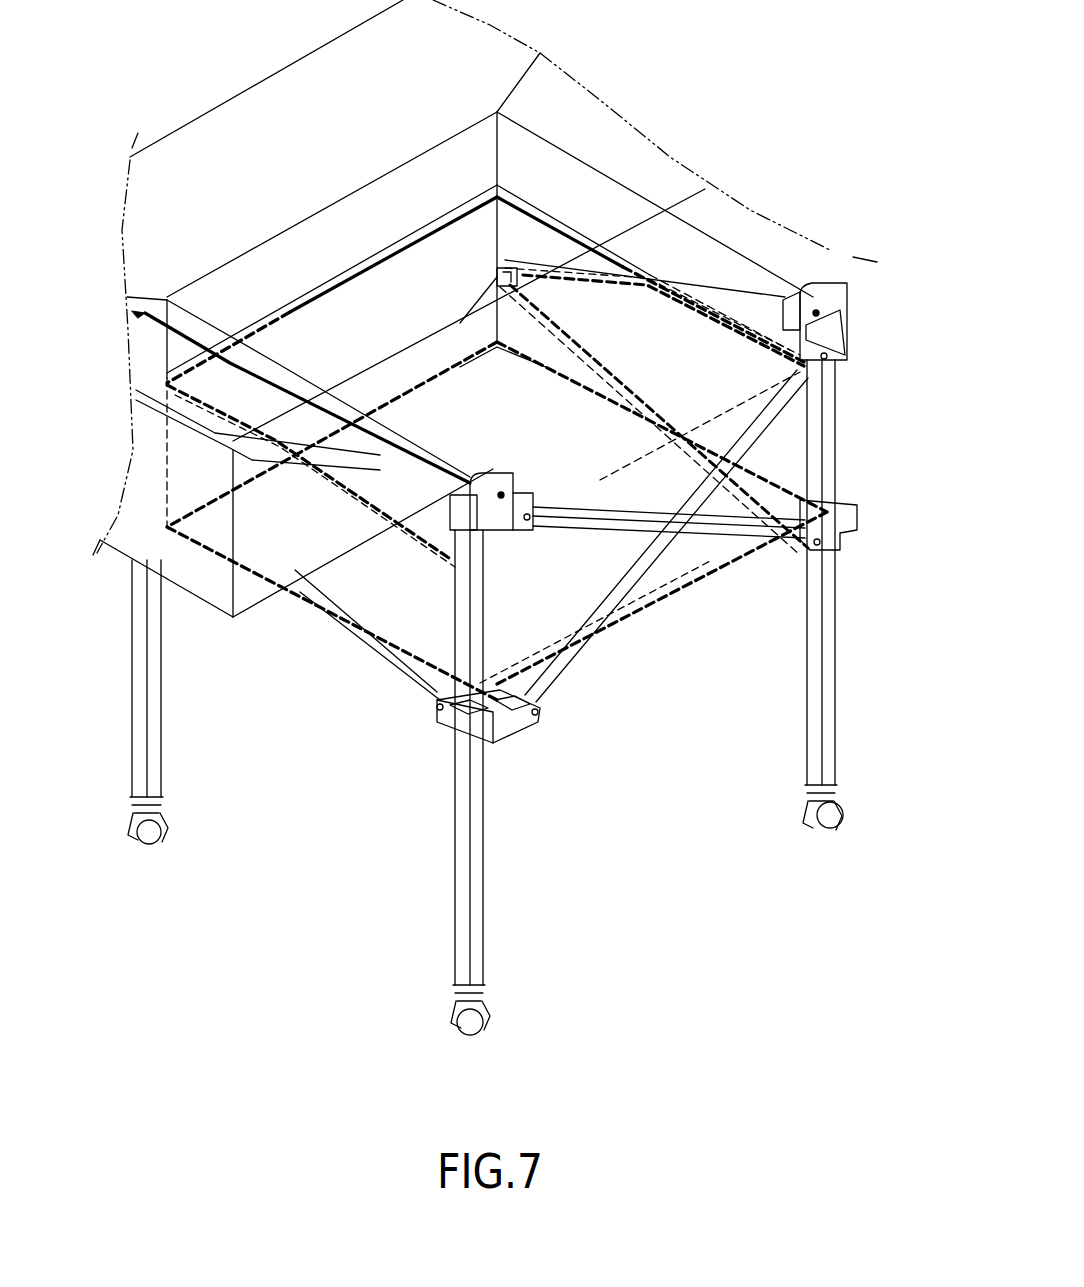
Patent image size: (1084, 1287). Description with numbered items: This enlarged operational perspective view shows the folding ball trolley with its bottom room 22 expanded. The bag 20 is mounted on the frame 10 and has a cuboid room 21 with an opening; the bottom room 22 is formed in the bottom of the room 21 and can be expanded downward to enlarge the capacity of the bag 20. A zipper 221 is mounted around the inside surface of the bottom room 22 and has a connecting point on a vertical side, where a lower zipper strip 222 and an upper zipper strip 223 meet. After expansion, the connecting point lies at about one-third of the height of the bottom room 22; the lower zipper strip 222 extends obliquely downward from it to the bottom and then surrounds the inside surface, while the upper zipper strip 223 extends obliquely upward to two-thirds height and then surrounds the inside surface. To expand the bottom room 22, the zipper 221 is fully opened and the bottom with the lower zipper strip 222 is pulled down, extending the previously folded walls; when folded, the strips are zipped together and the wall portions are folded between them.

The frame 10 is at (332, 761).
The bag 20 is at (124, 160).
The room 21 is at (300, 91).
The bottom room 22 is at (684, 614).
The zipper 221 is at (527, 252).
The lower zipper strip 222 is at (800, 490).
The upper zipper strip 223 is at (847, 322).